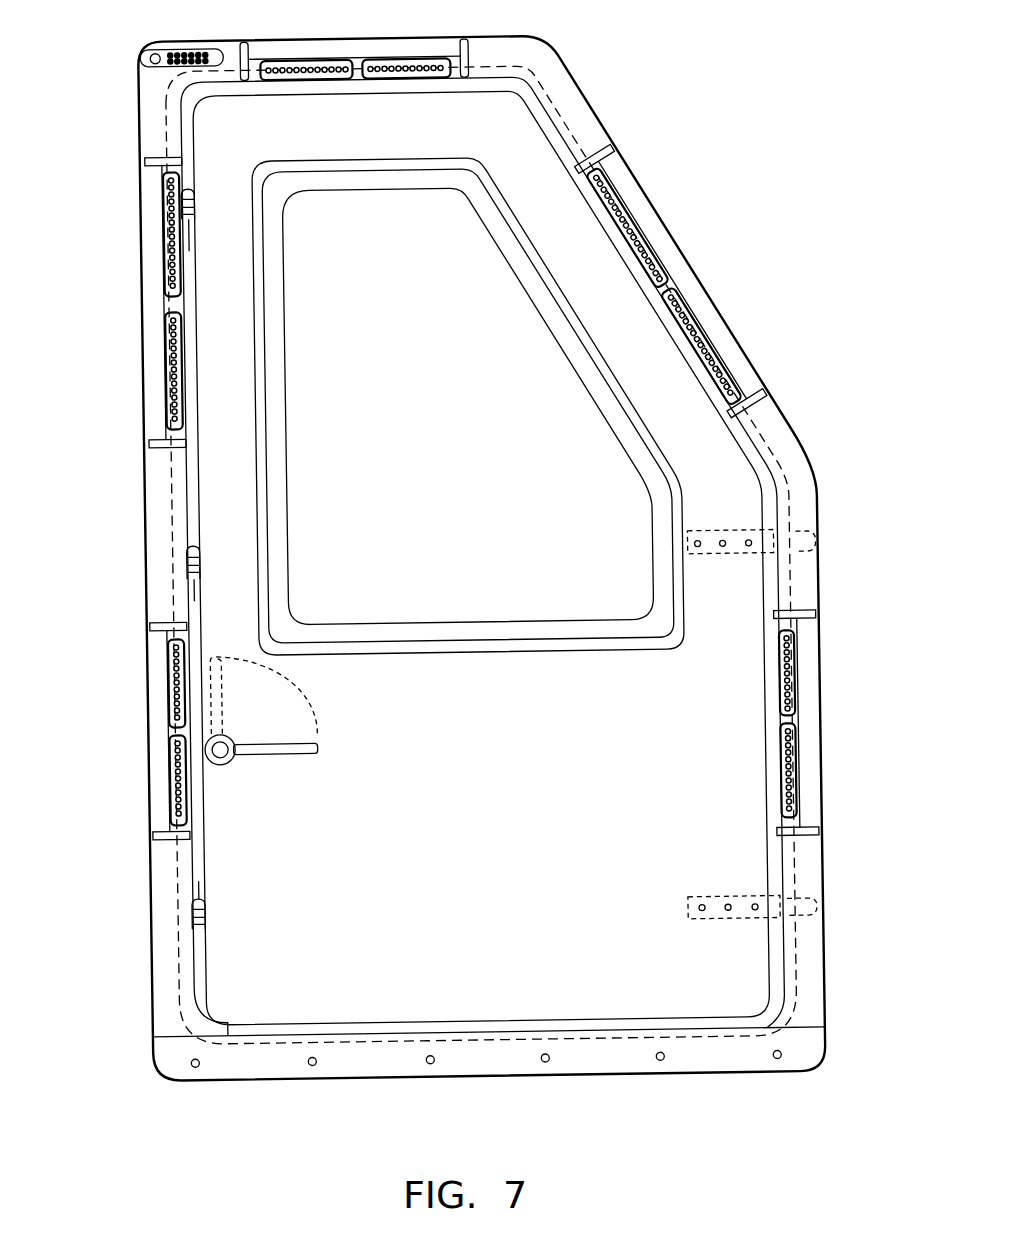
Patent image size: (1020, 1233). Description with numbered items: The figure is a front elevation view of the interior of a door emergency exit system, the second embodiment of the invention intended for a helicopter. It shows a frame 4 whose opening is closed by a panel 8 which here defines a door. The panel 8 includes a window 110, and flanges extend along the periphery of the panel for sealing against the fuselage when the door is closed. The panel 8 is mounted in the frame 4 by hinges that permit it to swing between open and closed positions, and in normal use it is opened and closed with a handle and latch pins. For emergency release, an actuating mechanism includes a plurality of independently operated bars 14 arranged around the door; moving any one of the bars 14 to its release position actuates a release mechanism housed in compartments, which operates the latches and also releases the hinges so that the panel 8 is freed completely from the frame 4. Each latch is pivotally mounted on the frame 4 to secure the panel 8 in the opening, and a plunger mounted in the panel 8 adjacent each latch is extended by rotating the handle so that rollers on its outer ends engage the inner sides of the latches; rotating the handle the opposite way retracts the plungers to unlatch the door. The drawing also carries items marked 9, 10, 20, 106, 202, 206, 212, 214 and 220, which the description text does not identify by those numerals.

The frame 4 is at (142, 410).
The panel 8 is at (435, 1034).
The section line 9- 9 is at (213, 178).
The hinge 10 is at (174, 208).
The bars 14 is at (410, 69).
The weld seam line 20 is at (555, 78).
The window frame 106 is at (568, 346).
The window 110 is at (696, 338).
The door panel 202 is at (455, 850).
The window glass 206 is at (412, 493).
The latch 212 is at (796, 503).
The hinge pin 214 is at (173, 240).
The latch plate 220 is at (737, 557).